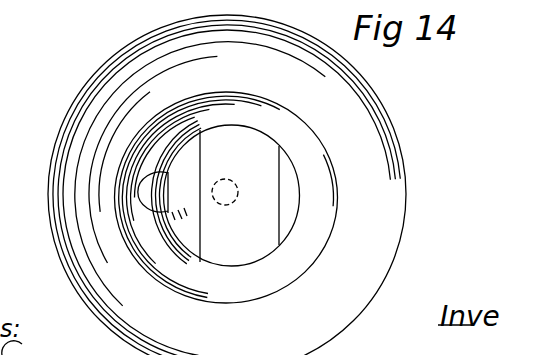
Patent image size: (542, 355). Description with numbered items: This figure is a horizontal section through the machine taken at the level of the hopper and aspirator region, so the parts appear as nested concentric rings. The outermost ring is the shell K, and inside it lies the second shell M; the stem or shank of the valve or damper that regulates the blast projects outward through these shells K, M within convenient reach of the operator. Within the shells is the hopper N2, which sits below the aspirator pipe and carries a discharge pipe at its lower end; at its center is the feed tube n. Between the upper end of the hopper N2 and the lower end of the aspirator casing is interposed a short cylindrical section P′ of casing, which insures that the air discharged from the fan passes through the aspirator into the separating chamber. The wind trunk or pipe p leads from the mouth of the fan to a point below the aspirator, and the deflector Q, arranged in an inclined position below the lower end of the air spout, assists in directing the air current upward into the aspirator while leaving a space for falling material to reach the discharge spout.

The shell K is at (50, 153).
The shell M is at (346, 199).
The hopper N2 is at (176, 165).
The deflector Q is at (214, 199).
The short cylindrical section of casing P′ is at (286, 233).
The feed tube n is at (225, 192).
The wind trunk or pipe p is at (153, 192).